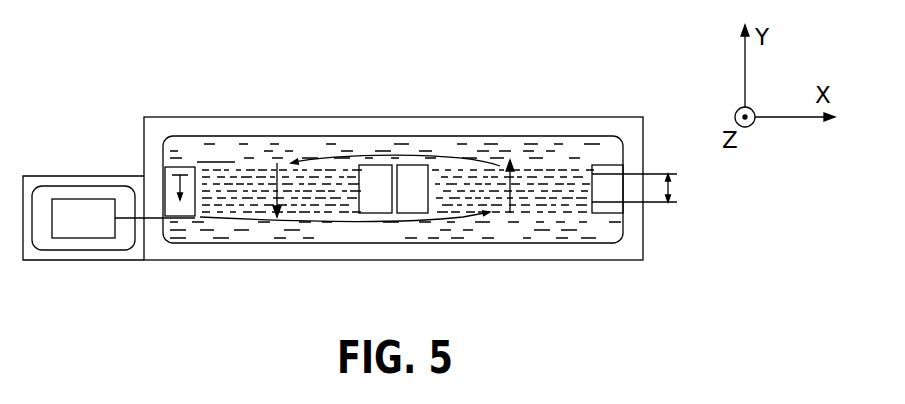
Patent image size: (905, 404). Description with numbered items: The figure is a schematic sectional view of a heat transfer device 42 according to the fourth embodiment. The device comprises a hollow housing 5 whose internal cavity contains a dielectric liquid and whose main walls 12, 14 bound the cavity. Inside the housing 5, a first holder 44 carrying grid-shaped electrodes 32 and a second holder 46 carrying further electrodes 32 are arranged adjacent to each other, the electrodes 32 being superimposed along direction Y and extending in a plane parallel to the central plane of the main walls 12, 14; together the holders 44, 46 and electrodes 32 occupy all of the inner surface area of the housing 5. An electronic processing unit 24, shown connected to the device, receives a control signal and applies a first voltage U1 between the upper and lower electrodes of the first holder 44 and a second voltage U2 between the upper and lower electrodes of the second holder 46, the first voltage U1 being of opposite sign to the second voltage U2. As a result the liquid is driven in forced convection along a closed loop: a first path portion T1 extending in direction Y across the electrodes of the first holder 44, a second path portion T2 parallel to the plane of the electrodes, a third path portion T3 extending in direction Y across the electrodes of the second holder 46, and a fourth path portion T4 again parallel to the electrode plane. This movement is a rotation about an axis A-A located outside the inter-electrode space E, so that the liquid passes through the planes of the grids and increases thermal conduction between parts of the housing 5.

The housing 5 is at (645, 232).
The main wall 12 is at (397, 104).
The main wall 14 is at (313, 262).
The electronic processing unit 24 is at (83, 218).
The electrodes 32 is at (225, 174).
The heat transfer device 42 is at (167, 290).
The first holder 44 is at (174, 167).
The second holder 46 is at (608, 168).
The inter-electrode space E is at (318, 188).
The axis A-A is at (394, 188).
The first voltage U1 is at (177, 185).
The second voltage U2 is at (650, 189).
The first path portion T1 is at (277, 163).
The second path portion T2 is at (462, 216).
The third path portion T3 is at (512, 178).
The fourth path portion T4 is at (348, 156).